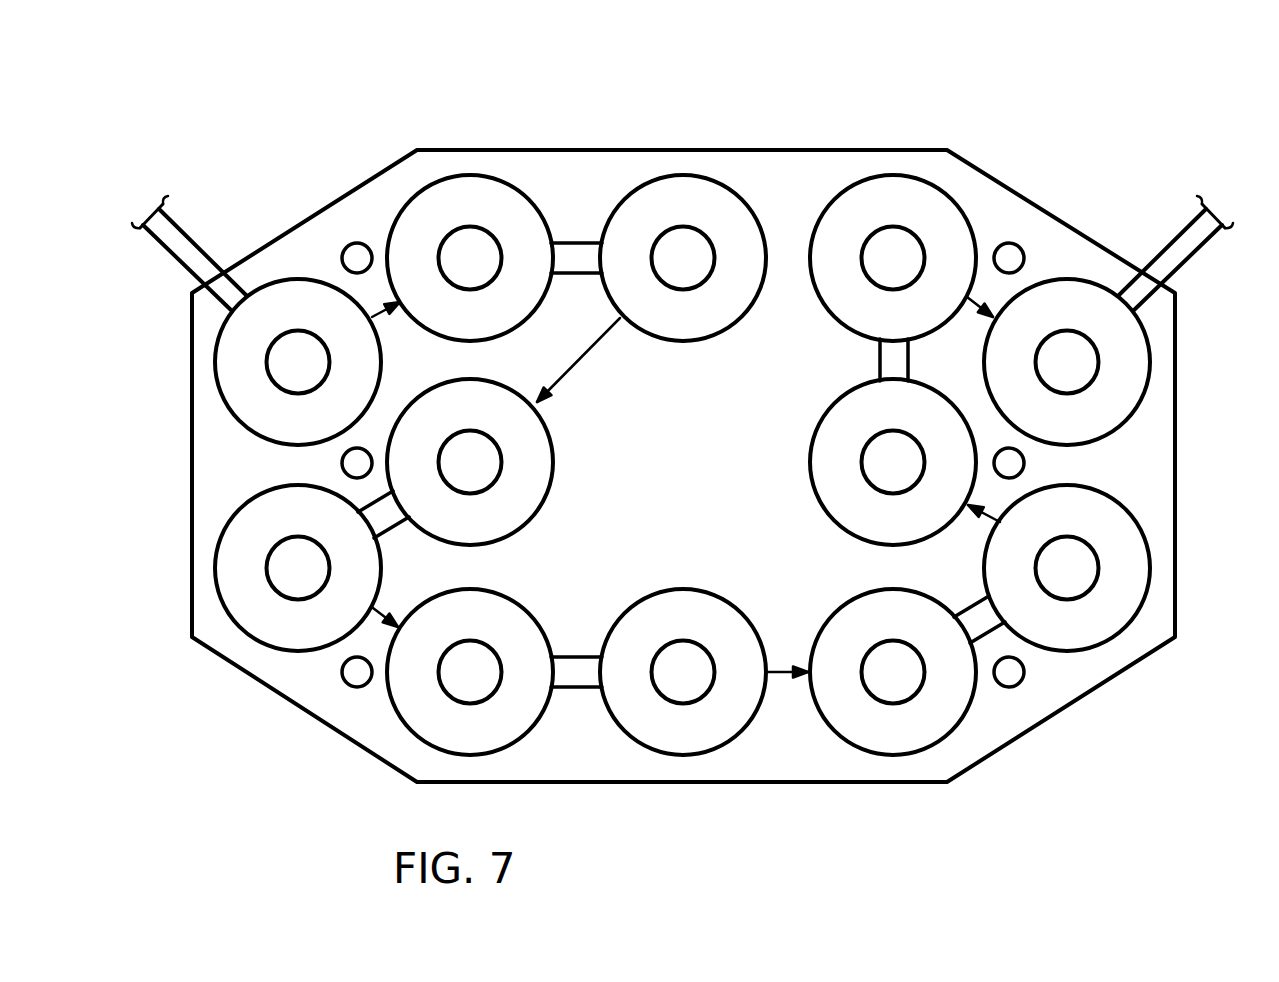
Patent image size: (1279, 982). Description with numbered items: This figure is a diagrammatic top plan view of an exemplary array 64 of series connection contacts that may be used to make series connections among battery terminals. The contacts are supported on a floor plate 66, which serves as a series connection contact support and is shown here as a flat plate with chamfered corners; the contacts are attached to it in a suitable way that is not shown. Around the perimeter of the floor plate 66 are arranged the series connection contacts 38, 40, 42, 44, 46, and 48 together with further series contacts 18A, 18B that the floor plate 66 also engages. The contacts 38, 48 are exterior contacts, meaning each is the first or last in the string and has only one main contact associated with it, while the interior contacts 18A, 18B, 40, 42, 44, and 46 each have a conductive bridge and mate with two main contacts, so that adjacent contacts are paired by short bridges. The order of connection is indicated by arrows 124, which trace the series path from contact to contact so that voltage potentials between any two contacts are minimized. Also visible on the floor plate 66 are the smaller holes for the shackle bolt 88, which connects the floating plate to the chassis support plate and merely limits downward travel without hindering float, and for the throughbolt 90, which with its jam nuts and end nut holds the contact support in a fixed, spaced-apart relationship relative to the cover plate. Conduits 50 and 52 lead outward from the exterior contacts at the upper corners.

The array 64 is at (338, 73).
The floor plate 66 is at (518, 148).
The series connection contact 18A is at (530, 227).
The series connection contact 18B is at (662, 172).
The series connection contact 38 is at (225, 405).
The series connection contact 40 is at (257, 630).
The series connection contact 42 is at (703, 728).
The series connection contact 44 is at (1114, 612).
The series connection contact 46 is at (883, 187).
The series connection contact 48 is at (1145, 380).
The inlet conduit 50 is at (187, 228).
The outlet conduit 52 is at (1182, 227).
The shackle bolt 88 is at (362, 448).
The throughbolt 90 is at (354, 258).
The arrows 124 is at (387, 608).